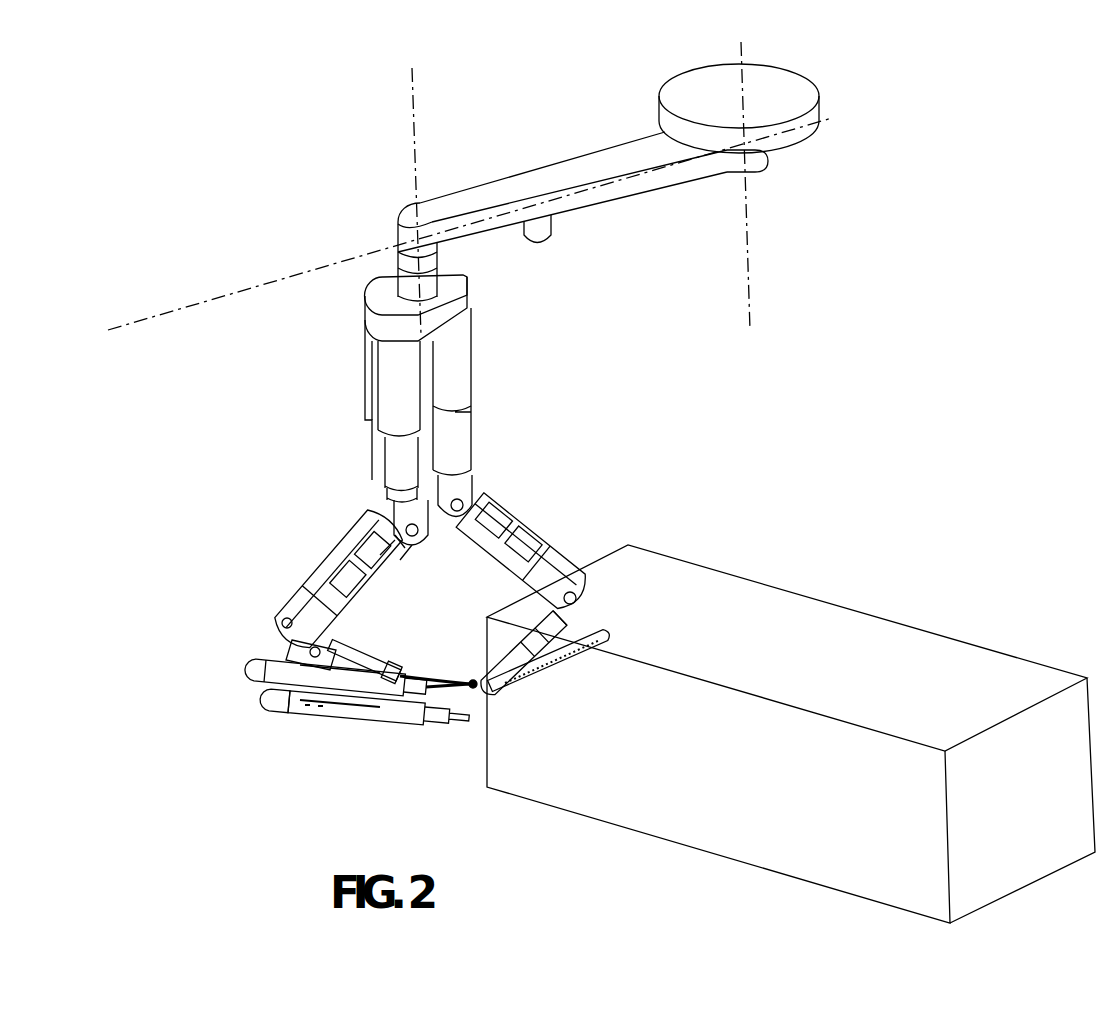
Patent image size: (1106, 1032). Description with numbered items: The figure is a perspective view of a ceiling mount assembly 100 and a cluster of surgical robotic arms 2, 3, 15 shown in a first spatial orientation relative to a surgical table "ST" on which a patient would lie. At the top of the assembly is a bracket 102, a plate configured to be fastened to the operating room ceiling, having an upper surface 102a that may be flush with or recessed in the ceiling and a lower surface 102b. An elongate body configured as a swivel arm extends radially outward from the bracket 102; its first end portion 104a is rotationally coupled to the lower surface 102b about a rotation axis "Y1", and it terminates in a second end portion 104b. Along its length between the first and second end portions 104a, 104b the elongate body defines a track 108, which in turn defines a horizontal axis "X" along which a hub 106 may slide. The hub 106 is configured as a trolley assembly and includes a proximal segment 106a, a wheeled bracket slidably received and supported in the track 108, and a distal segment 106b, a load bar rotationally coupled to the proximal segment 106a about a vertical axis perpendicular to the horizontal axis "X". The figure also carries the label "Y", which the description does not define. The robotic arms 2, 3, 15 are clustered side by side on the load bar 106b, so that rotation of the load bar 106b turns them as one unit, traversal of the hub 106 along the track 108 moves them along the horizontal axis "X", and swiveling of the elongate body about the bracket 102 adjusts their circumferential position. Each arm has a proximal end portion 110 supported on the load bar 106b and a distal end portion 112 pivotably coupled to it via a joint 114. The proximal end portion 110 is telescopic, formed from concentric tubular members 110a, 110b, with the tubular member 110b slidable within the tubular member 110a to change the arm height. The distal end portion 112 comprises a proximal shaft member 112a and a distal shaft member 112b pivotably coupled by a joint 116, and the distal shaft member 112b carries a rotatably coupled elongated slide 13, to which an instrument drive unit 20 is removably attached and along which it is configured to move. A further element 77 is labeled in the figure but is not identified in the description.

The ceiling mount assembly 100 is at (396, 198).
The bracket 102 is at (826, 103).
The upper surface 102a is at (677, 88).
The lower surface 102b is at (670, 163).
The first end portion 104a is at (728, 172).
The second end portion 104b is at (426, 210).
The hub 106 is at (362, 287).
The proximal segment 106a is at (440, 262).
The distal segment 106b is at (471, 300).
The track 108 is at (548, 220).
The proximal end portion 110 is at (385, 378).
The tubular member 110a is at (393, 420).
The tubular member 110b is at (392, 443).
The distal end portion 112 is at (325, 585).
The proximal shaft member 112a is at (377, 590).
The distal shaft member 112b is at (290, 660).
The joint 114 is at (416, 537).
The joint 116 is at (274, 622).
The surgical robotic arm 15 is at (363, 340).
The surgical robotic arm 2 is at (366, 465).
The surgical robotic arm 3 is at (487, 461).
The arm joint ring 77 is at (446, 402).
The elongated slide 13 is at (354, 712).
The instrument drive unit 20 is at (300, 714).
The surgical table ST is at (975, 645).
The horizontal axis X is at (454, 232).
The Y axis Y is at (415, 191).
The rotation axis Y1 is at (759, 189).